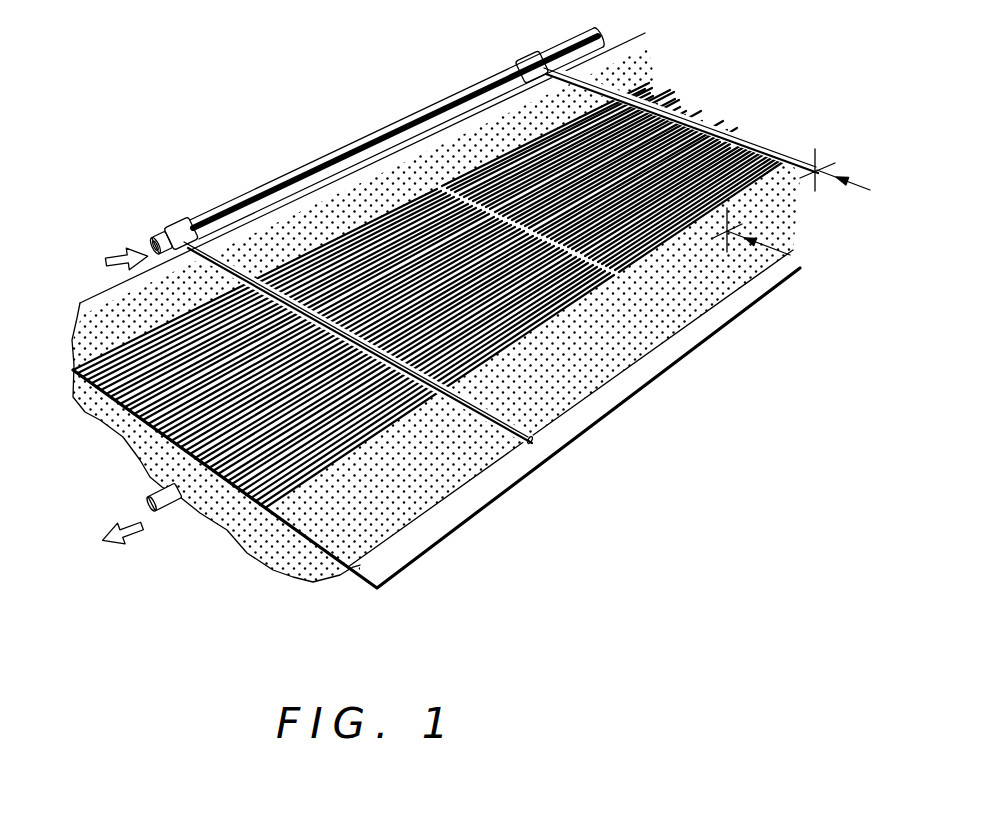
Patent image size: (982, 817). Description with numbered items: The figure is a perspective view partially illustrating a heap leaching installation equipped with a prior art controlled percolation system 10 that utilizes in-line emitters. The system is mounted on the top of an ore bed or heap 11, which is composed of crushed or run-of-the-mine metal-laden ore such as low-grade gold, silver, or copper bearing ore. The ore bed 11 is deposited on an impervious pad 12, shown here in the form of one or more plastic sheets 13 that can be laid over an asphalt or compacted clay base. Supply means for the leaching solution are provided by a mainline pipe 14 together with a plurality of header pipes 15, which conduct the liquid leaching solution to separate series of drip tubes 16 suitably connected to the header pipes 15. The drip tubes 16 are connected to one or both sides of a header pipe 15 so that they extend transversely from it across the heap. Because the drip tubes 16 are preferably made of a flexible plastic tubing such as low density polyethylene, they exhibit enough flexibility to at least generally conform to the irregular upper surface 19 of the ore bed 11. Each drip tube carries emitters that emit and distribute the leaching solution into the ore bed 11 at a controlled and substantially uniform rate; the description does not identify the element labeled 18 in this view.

The controlled percolation system 10 is at (458, 319).
The ore bed 11 is at (450, 146).
The pad 12 is at (122, 465).
The plastic sheets 13 is at (291, 578).
The mainline pipe 14 is at (234, 203).
The header pipes 15 is at (612, 72).
The drip tubes 16 is at (578, 316).
The outlet 18 is at (176, 506).
The upper surface 19 is at (505, 110).